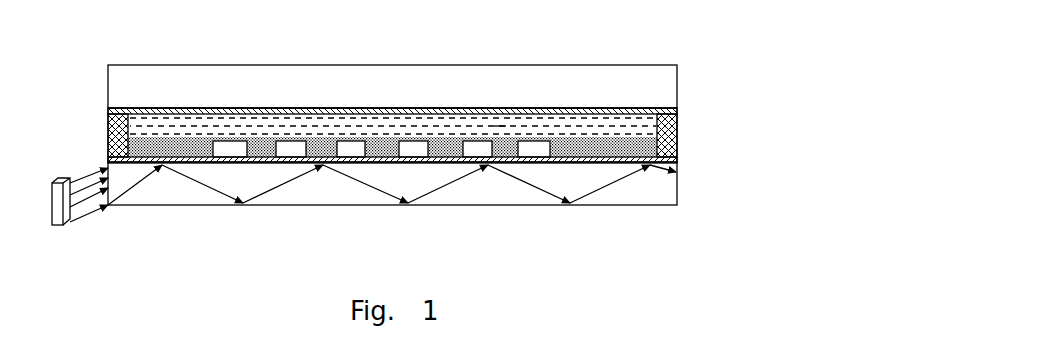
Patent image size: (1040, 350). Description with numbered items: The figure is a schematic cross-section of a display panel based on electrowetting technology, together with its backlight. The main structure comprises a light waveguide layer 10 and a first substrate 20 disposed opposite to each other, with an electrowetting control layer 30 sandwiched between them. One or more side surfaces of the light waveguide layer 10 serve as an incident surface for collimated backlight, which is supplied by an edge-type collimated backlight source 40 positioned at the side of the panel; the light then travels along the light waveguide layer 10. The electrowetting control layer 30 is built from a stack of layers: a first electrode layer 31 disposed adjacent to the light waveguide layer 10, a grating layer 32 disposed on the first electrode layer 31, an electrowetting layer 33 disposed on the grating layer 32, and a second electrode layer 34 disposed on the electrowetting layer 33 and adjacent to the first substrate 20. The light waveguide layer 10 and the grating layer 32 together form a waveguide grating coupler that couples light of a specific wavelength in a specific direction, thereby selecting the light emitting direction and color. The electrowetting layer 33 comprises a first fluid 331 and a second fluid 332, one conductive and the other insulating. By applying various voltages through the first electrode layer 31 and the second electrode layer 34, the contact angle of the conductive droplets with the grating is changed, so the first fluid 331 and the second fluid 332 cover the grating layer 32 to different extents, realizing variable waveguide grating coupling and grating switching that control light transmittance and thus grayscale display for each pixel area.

The light waveguide layer 10 is at (688, 180).
The first substrate 20 is at (688, 85).
The electrowetting control layer 30 is at (688, 132).
The first electrode layer 31 is at (248, 163).
The grating layer 32 is at (347, 147).
The electrowetting layer 33 is at (453, 126).
The first fluid 331 is at (445, 157).
The second fluid 332 is at (500, 125).
The second electrode layer 34 is at (355, 109).
The edge-type collimated backlight source 40 is at (57, 183).